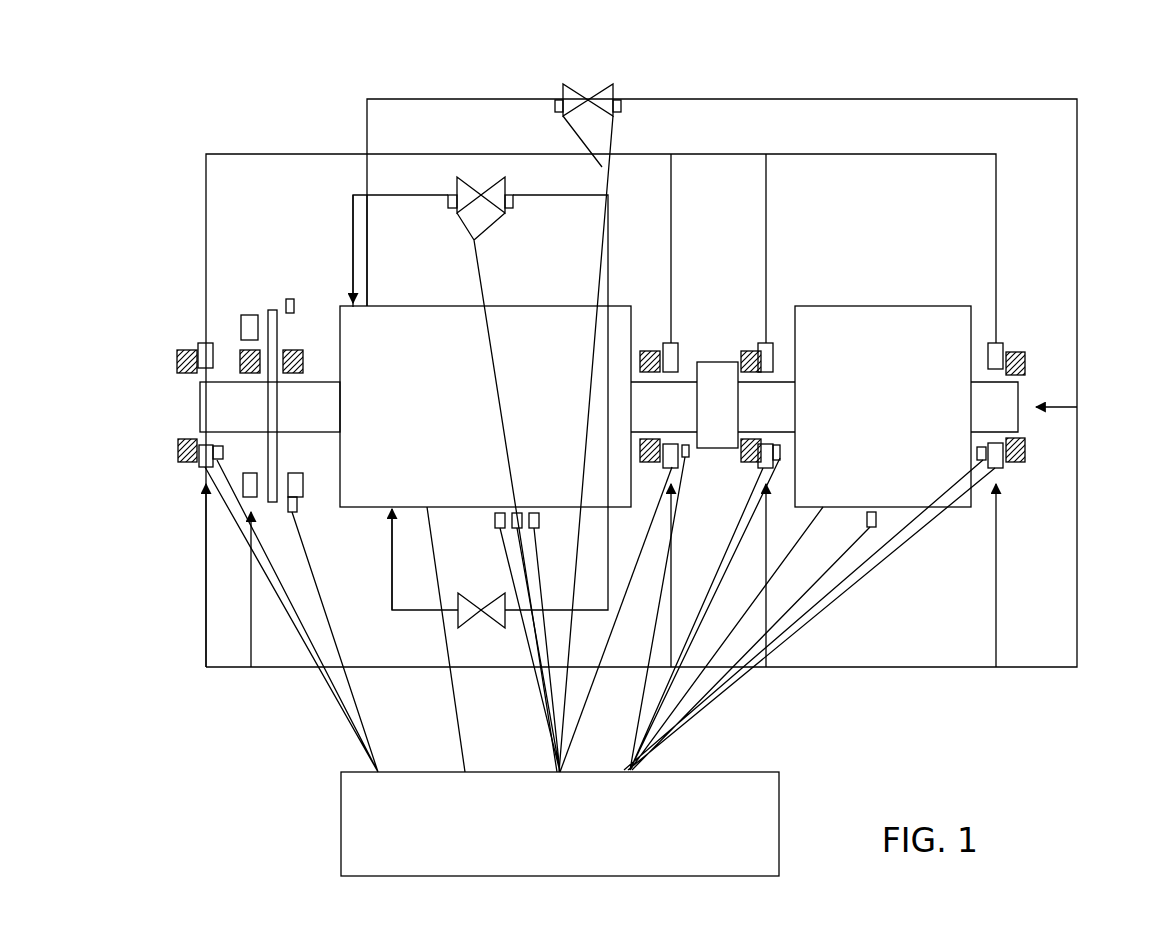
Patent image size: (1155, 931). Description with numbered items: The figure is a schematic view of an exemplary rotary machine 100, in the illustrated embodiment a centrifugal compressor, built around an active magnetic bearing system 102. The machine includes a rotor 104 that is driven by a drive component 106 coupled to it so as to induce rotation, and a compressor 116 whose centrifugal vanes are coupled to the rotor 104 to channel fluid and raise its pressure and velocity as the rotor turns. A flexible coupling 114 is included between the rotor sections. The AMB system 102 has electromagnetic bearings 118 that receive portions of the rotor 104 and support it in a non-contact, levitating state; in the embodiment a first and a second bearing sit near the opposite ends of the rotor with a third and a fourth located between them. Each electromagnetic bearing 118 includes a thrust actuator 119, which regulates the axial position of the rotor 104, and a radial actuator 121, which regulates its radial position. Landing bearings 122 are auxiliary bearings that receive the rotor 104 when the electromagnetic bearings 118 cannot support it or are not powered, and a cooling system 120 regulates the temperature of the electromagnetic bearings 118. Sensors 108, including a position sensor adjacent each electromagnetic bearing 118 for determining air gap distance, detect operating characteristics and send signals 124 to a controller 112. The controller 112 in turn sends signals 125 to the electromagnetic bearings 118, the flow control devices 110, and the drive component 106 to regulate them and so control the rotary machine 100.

The rotary machine 100 is at (1037, 66).
The active magnetic bearing system 102 is at (150, 333).
The rotor 104 is at (1018, 422).
The drive component 106 is at (882, 306).
The sensor 108 is at (556, 98).
The flow control device 110 is at (592, 86).
The controller 112 is at (341, 823).
The flexible coupling 114 is at (717, 362).
The compressor 116 is at (536, 306).
The electromagnetic bearing 118 is at (205, 343).
The thrust actuator 119 is at (270, 310).
The cooling system 120 is at (222, 694).
The radial actuator 121 is at (199, 465).
The landing bearing 122 is at (240, 372).
The signal 124 is at (475, 265).
The signal 125 is at (360, 705).